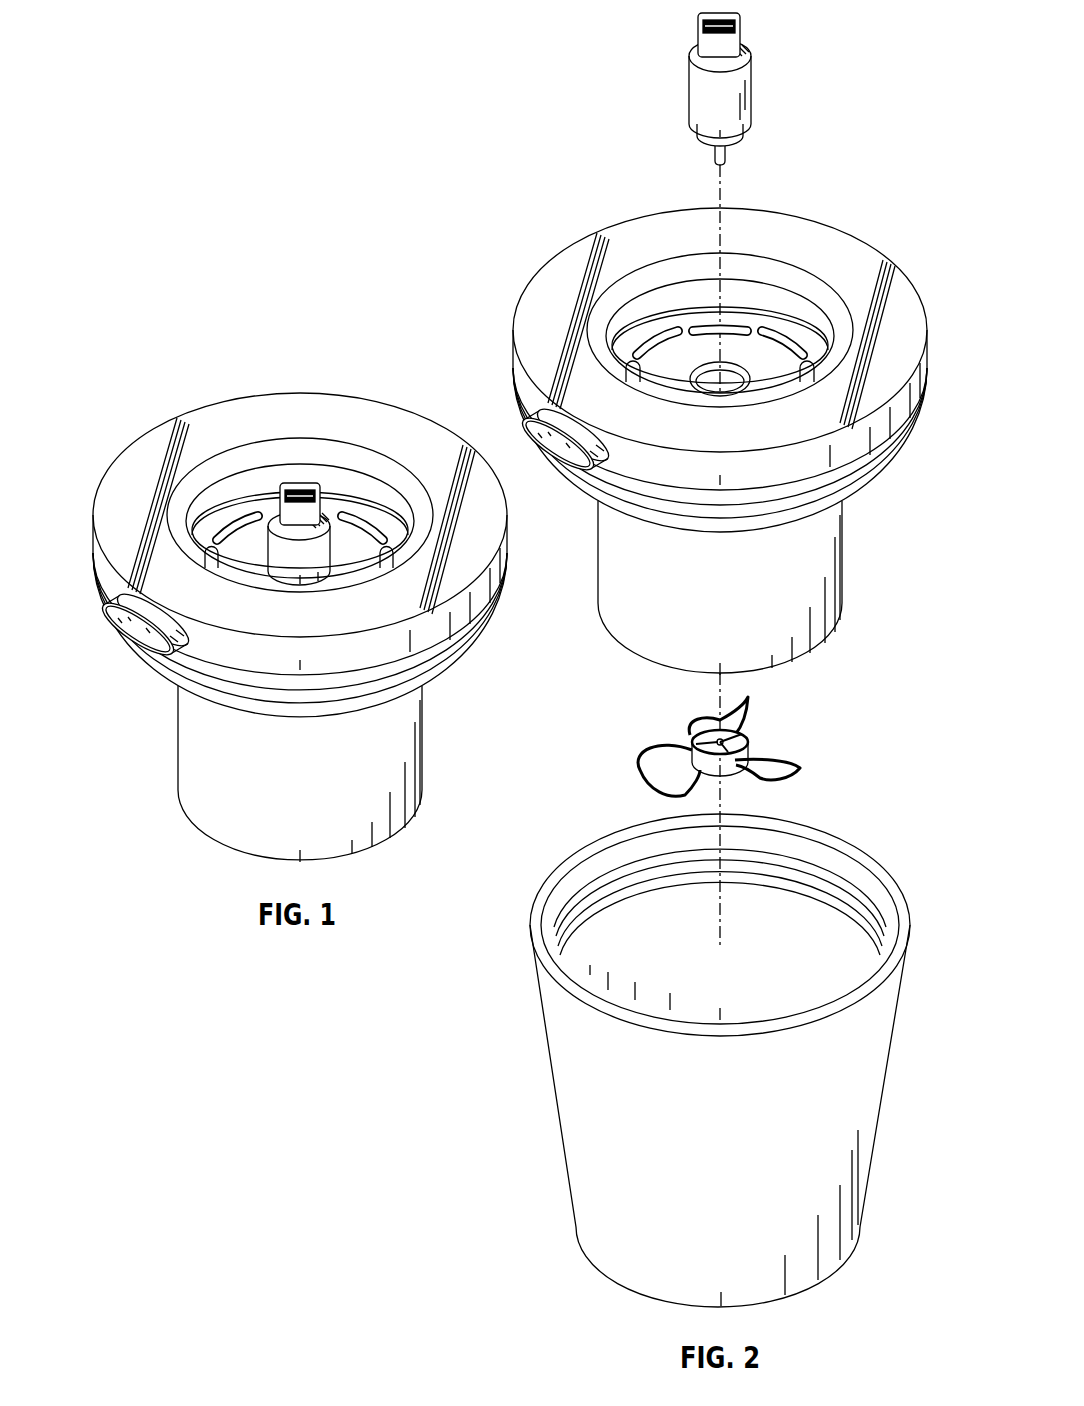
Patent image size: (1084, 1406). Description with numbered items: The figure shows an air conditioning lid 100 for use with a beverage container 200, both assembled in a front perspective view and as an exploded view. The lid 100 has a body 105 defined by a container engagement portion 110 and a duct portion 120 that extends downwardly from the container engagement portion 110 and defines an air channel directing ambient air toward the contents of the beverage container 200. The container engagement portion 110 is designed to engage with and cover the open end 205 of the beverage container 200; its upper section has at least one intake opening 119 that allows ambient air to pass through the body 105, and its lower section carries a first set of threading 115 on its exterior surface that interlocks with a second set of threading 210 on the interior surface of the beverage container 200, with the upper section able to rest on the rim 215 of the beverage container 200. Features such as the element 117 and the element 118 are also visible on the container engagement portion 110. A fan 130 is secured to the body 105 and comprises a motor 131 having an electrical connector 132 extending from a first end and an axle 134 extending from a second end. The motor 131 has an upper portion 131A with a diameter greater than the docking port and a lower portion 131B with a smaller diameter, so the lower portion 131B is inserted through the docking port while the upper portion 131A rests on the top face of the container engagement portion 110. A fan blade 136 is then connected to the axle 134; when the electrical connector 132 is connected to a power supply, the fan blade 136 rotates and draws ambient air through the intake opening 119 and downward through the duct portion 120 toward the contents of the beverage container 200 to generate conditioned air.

In FIG. 1, the lid 100 is at (278, 610).
In FIG. 2, the lid 100 is at (715, 656).
In FIG. 2, the body 105 is at (715, 656).
In FIG. 1, the container engagement portion 110 is at (278, 617).
In FIG. 2, the container engagement portion 110 is at (715, 432).
In FIG. 1, the first set of threading 115 is at (438, 668).
In FIG. 2, the first set of threading 115 is at (858, 478).
In FIG. 1, the tab 117 is at (112, 602).
In FIG. 2, the tab 117 is at (532, 412).
In FIG. 1, the recess 118 is at (396, 472).
In FIG. 2, the recess 118 is at (816, 295).
In FIG. 1, the intake opening 119 is at (238, 516).
In FIG. 2, the intake opening 119 is at (662, 333).
In FIG. 1, the duct portion 120 is at (195, 800).
In FIG. 2, the duct portion 120 is at (825, 585).
In FIG. 1, the fan 130 is at (349, 512).
In FIG. 2, the motor 131 is at (719, 99).
In FIG. 2, the upper portion 131A is at (700, 90).
In FIG. 2, the lower portion 131B is at (743, 140).
In FIG. 1, the electrical connector 132 is at (326, 496).
In FIG. 2, the electrical connector 132 is at (745, 33).
In FIG. 2, the axle 134 is at (725, 157).
In FIG. 2, the fan blade 136 is at (745, 757).
In FIG. 2, the beverage container 200 is at (712, 1060).
In FIG. 2, the open end 205 is at (583, 964).
In FIG. 2, the second set of threading 210 is at (865, 888).
In FIG. 2, the rim 215 is at (880, 965).